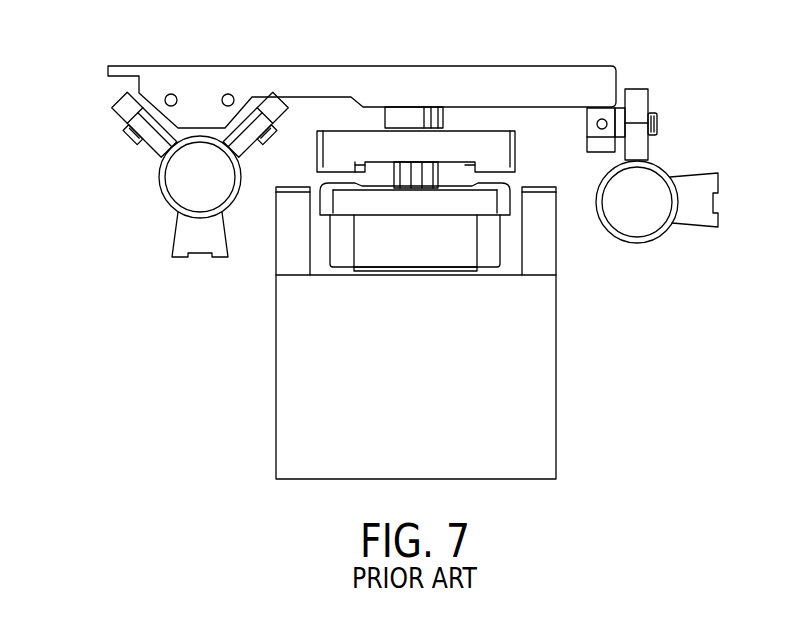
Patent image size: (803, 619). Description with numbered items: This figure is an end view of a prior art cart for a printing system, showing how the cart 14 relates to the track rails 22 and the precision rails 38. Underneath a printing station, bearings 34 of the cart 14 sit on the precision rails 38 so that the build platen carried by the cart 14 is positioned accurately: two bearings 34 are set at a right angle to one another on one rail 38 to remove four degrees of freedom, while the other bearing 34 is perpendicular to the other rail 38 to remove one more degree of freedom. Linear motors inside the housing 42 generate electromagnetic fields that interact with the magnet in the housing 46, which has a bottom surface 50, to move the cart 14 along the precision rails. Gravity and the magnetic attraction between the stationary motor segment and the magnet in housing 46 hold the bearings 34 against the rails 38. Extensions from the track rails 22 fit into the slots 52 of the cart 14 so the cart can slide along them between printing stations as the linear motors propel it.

The cart 14 is at (187, 65).
The track rails 22 is at (282, 257).
The bearings 34 is at (115, 108).
The precision rails 38 is at (168, 198).
The housing 42 is at (285, 370).
The housing 46 is at (452, 258).
The bottom surface 50 is at (400, 270).
The slots 52 is at (500, 178).